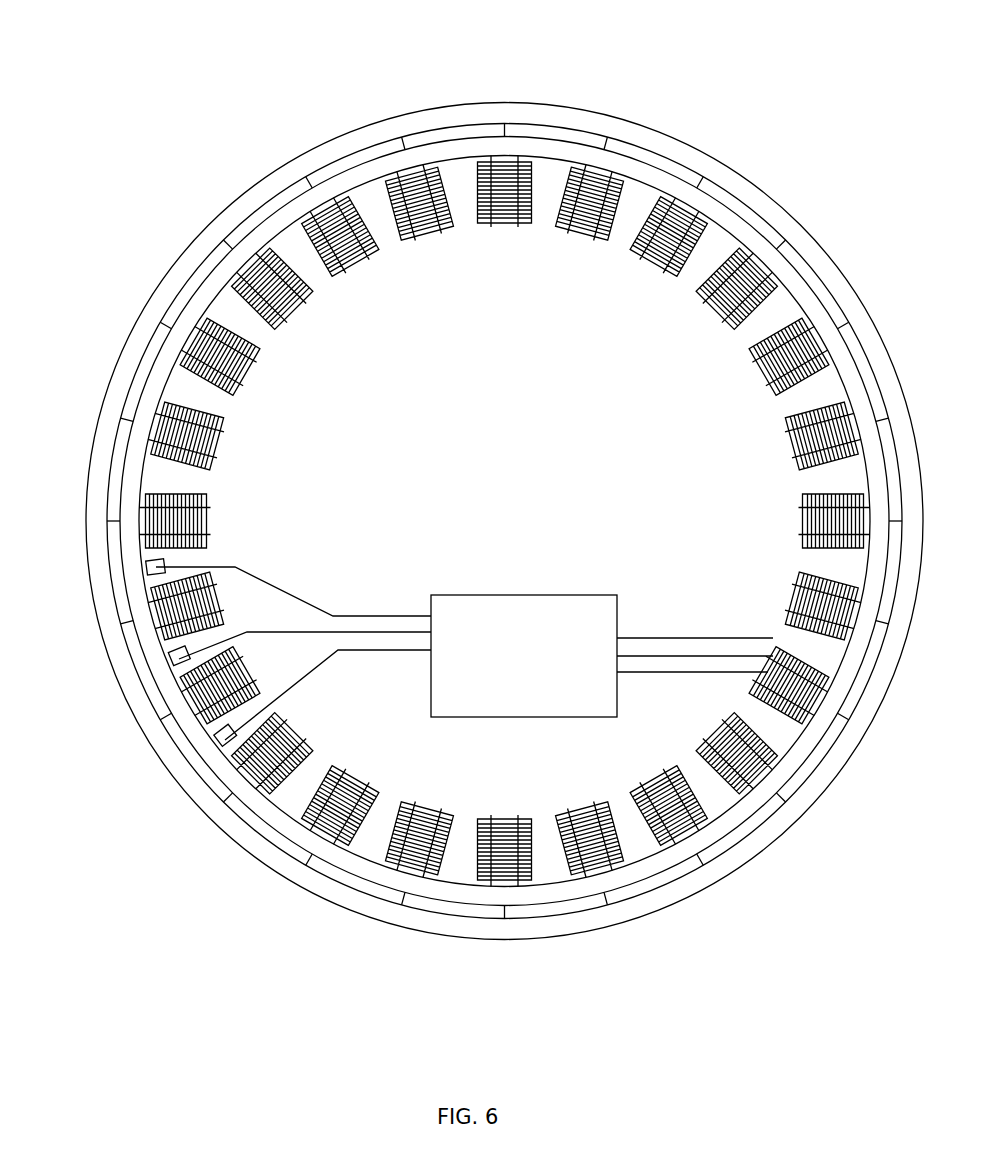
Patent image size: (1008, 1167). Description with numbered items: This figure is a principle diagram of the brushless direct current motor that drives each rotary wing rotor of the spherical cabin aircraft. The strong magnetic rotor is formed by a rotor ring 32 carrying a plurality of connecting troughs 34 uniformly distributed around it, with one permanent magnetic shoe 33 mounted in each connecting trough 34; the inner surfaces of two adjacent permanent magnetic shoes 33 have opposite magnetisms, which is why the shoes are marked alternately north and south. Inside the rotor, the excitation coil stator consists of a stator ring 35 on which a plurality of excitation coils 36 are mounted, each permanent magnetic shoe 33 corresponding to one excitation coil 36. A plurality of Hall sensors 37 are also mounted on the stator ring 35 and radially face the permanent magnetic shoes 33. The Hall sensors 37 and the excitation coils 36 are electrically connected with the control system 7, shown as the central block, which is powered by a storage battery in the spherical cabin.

The control system 7 is at (527, 662).
The rotor ring 32 is at (227, 222).
The permanent magnetic shoes 33 is at (152, 357).
The connecting troughs 34 is at (122, 417).
The stator rings 35 is at (377, 207).
The excitation coils 36 is at (488, 188).
The Hall sensors 37 is at (222, 745).